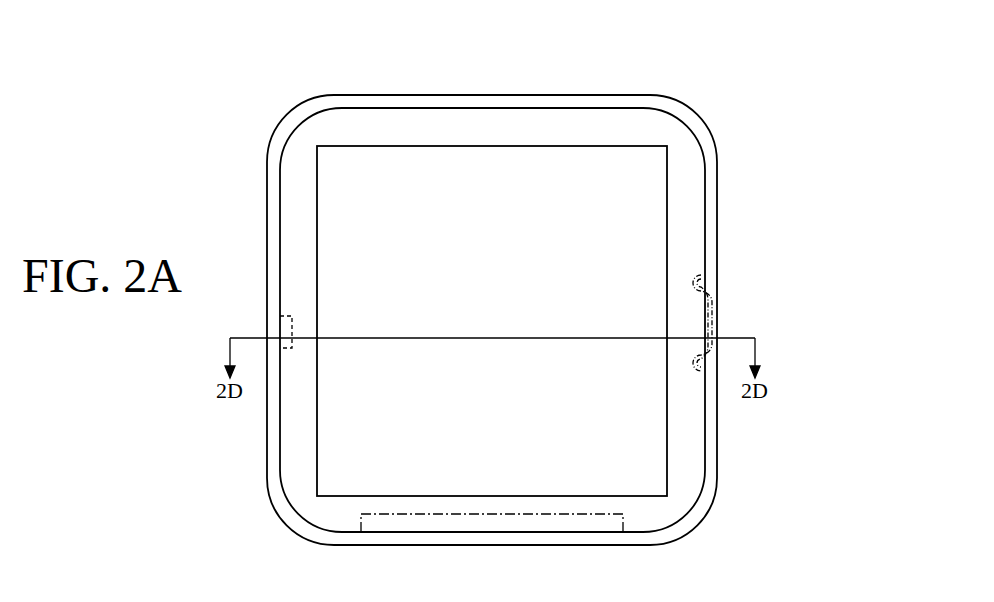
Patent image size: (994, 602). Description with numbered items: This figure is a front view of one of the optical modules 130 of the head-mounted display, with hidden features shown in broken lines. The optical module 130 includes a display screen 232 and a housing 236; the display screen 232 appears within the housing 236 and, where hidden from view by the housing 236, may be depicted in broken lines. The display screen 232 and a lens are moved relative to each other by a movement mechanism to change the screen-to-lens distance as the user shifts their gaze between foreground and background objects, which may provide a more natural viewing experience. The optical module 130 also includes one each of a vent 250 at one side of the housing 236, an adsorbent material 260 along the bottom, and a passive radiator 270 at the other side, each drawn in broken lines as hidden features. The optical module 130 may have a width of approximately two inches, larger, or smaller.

The optical module 130 is at (716, 74).
The display screen 232 is at (667, 182).
The housing 236 is at (718, 224).
The vent 250 is at (292, 330).
The adsorbent material 260 is at (624, 521).
The passive radiator 270 is at (712, 312).